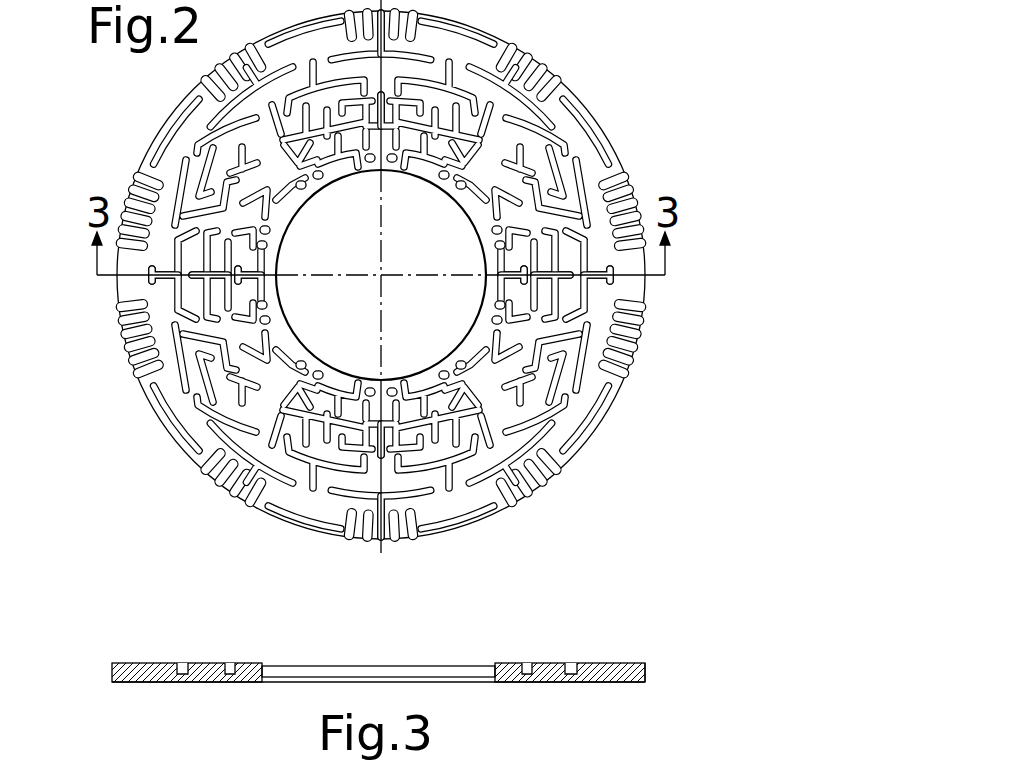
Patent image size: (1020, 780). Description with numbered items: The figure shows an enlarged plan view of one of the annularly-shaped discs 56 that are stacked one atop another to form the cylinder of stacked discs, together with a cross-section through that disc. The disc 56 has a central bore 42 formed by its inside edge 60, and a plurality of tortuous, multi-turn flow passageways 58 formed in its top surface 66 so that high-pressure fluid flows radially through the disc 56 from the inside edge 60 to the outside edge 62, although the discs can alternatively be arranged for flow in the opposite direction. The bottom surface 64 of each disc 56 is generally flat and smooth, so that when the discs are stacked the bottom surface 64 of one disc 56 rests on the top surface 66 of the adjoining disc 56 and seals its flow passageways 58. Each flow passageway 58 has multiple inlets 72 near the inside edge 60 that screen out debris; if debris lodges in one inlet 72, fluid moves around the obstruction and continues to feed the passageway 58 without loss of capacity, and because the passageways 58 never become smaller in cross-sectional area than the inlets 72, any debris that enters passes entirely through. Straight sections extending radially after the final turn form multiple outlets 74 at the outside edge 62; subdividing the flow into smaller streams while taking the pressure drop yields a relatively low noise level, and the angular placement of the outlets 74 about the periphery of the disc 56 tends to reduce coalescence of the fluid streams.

In FIG. 2, the disc 56 is at (124, 138).
In FIG. 3, the disc 56 is at (158, 608).
In FIG. 2, the flow passageway 58 is at (585, 152).
In FIG. 3, the flow passageway 58 is at (573, 665).
In FIG. 2, the outlet 74 is at (637, 170).
In FIG. 2, the top surface 66 is at (590, 428).
In FIG. 3, the top surface 66 is at (612, 668).
In FIG. 2, the outside edge 62 is at (462, 536).
In FIG. 3, the outside edge 62 is at (645, 672).
In FIG. 2, the inside edge 60 is at (424, 352).
In FIG. 3, the inside edge 60 is at (478, 680).
In FIG. 2, the inlet 72 is at (482, 230).
In FIG. 2, the bore 42 is at (350, 335).
In FIG. 3, the bore 42 is at (398, 668).
In FIG. 3, the bottom surface 64 is at (622, 684).